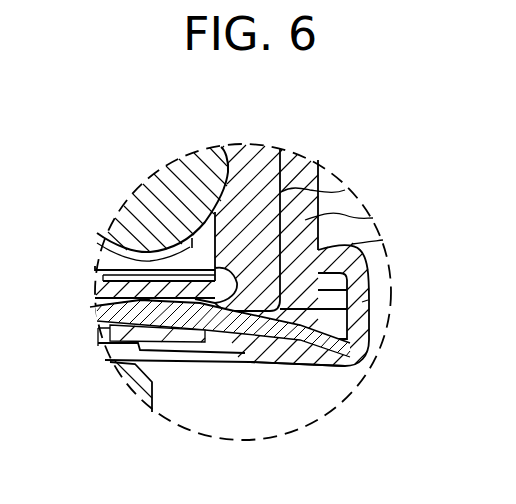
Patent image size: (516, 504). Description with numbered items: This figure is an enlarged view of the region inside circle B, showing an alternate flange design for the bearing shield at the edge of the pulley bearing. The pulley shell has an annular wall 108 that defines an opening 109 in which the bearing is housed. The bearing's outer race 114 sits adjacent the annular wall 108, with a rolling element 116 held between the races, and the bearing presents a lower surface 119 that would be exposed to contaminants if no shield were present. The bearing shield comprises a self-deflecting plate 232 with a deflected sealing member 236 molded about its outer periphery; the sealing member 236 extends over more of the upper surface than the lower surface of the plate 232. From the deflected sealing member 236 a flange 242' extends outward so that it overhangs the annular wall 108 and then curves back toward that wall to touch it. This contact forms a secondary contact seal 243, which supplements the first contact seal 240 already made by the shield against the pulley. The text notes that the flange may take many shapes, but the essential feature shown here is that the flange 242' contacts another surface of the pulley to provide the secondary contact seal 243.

The outer race 114 is at (247, 135).
The rolling element 116 is at (200, 163).
The lower surface 119 is at (95, 296).
The opening 109 is at (345, 190).
The annular wall 108 is at (373, 218).
The secondary contact seal 243 is at (383, 240).
The flange 242' is at (412, 279).
The first contact seal 240 is at (345, 327).
The self-deflecting plate 232 is at (160, 321).
The deflected sealing member 236 is at (260, 345).
The circle B is at (347, 166).